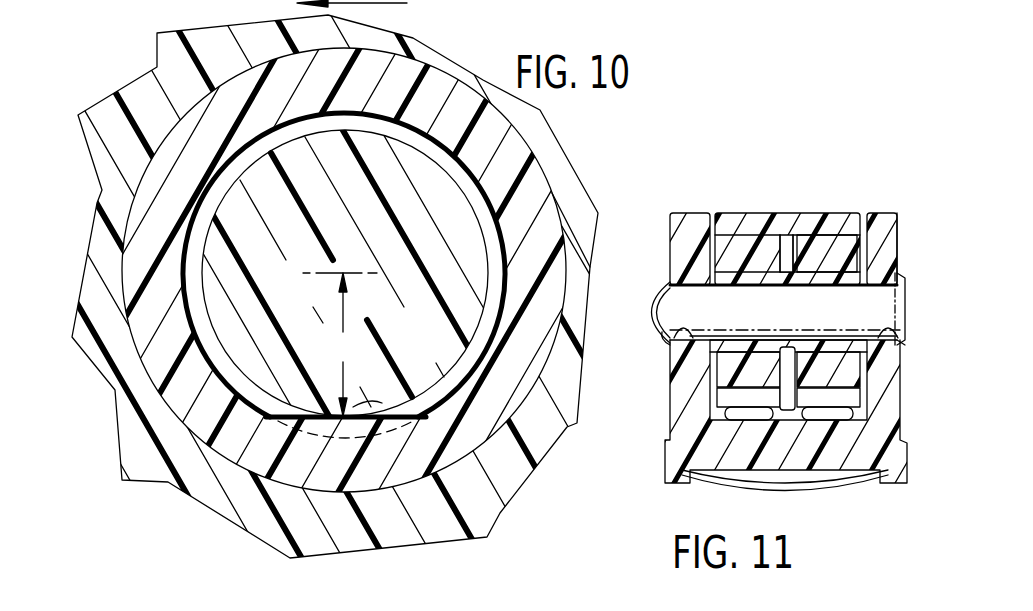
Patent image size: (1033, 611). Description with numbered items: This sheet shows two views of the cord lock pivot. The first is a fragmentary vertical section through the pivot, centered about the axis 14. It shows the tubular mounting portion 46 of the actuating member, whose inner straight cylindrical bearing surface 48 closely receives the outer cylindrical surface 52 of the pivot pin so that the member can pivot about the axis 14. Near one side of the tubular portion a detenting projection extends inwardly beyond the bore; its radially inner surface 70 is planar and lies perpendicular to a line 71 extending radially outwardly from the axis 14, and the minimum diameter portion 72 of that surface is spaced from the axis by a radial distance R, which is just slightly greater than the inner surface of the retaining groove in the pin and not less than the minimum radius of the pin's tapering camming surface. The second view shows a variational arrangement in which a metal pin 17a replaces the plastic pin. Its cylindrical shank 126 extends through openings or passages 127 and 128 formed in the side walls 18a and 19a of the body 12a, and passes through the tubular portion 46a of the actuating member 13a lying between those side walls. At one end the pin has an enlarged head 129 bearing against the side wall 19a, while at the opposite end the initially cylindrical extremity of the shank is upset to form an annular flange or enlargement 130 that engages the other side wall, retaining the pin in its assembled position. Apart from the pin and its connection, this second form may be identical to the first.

In FIG. 10, the axis 14 is at (344, 273).
In FIG. 10, the tubular mounting portion 46 is at (190, 150).
In FIG. 10, the inner straight cylindrical bearing surface 48 is at (497, 222).
In FIG. 10, the outer cylindrical surface 52 is at (188, 233).
In FIG. 10, the radially inner surface 70 is at (303, 418).
In FIG. 10, the radial line 71 is at (365, 321).
In FIG. 10, the minimum diameter portion 72 is at (382, 403).
In FIG. 11, the body 12a is at (660, 463).
In FIG. 11, the actuating member 13a is at (735, 252).
In FIG. 11, the metal pin 17a is at (830, 300).
In FIG. 11, the side wall 18a is at (888, 260).
In FIG. 11, the side wall 19a is at (674, 265).
In FIG. 11, the tubular mounting portion 46a is at (815, 277).
In FIG. 11, the cylindrical shank 126 is at (770, 300).
In FIG. 11, the opening or passage 127 is at (668, 343).
In FIG. 11, the opening or passage 128 is at (903, 345).
In FIG. 11, the enlarged head 129 is at (655, 303).
In FIG. 11, the annular flange or enlargement 130 is at (905, 312).